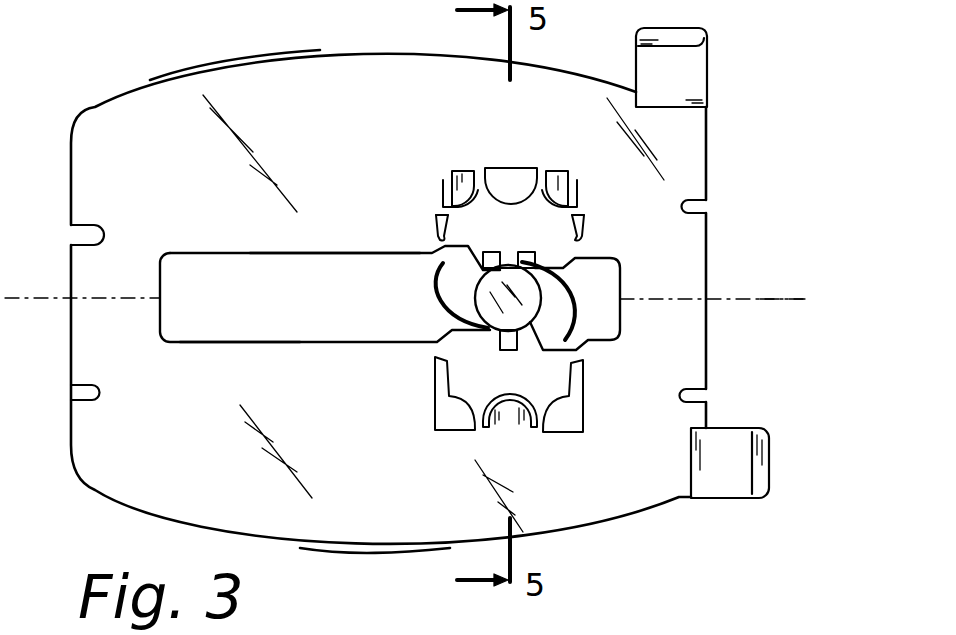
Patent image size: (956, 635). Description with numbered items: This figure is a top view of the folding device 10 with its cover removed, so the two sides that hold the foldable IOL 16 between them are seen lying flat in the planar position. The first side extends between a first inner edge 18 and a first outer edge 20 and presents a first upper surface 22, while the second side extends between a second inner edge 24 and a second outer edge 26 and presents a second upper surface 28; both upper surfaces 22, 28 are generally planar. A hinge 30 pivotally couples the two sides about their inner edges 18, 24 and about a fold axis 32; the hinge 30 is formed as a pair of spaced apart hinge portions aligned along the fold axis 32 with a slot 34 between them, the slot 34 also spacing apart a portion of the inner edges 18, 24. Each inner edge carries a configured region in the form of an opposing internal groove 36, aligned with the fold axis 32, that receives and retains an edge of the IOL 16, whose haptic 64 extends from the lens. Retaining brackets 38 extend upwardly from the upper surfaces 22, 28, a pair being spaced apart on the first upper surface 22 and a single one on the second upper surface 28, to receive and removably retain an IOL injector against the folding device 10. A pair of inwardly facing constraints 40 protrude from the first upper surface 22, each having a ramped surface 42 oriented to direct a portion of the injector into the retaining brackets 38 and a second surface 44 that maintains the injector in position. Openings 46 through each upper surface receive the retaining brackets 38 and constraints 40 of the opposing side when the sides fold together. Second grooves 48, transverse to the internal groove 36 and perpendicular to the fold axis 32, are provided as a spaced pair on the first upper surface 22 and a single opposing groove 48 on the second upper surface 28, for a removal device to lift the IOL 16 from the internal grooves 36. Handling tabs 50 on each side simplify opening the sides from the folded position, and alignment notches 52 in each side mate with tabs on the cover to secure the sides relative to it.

The folding device 10 is at (165, 56).
The foldable IOL 16 is at (437, 298).
The first inner edge 18 is at (227, 253).
The first outer edge 20 is at (269, 53).
The first upper surface 22 is at (300, 97).
The second inner edge 24 is at (330, 340).
The second outer edge 26 is at (402, 553).
The second upper surface 28 is at (347, 517).
The hinge 30 is at (701, 297).
The fold axis 32 is at (770, 313).
The slot 34 is at (245, 303).
The internal groove 36 is at (555, 310).
The retaining bracket 38 is at (457, 170).
The constraint 40 is at (432, 218).
The ramped surface 42 is at (437, 240).
The second surface 44 is at (506, 168).
The opening 46 is at (450, 220).
The second groove 48 is at (533, 232).
The handling tab 50 is at (709, 77).
The alignment notch 52 is at (78, 240).
The haptic 64 is at (440, 308).